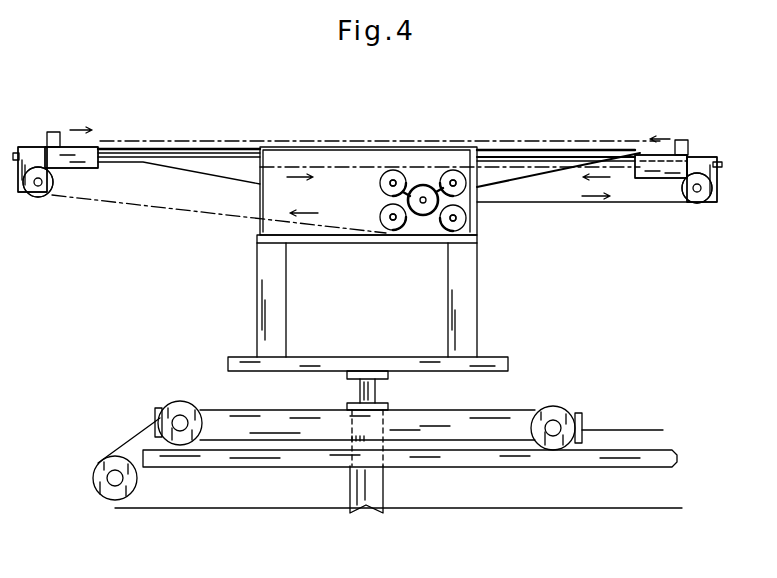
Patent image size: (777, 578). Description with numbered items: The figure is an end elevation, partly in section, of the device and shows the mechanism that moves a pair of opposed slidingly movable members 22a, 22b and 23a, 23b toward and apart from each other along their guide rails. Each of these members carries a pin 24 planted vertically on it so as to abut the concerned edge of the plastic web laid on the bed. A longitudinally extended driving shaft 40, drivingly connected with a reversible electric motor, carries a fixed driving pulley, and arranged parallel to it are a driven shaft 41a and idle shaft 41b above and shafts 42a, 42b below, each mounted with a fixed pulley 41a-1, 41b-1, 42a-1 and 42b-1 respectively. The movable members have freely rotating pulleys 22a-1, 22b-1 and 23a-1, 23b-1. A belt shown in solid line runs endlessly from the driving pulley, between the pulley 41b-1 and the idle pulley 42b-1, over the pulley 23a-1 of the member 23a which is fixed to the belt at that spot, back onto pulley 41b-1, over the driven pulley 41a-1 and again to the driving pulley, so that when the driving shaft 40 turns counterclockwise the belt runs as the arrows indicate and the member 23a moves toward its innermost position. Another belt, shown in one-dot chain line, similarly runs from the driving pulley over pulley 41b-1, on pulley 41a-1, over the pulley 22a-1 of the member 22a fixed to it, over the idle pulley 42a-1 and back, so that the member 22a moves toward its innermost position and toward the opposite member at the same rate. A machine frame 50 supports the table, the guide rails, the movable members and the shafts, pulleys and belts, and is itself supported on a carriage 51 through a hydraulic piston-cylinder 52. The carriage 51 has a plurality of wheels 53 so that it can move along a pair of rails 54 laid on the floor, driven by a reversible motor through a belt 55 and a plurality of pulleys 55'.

The pin 24 is at (52, 132).
The slidingly movable member 22a is at (88, 150).
The slidingly movable member 22b is at (81, 150).
The pulley 22a-1 is at (38, 198).
The pulley 22b-1 is at (53, 211).
The slidingly movable member 23a is at (692, 157).
The slidingly movable member 23b is at (692, 167).
The pulley 23a-1 is at (705, 218).
The pulley 23b-1 is at (713, 219).
The driving shaft 40 is at (421, 186).
The driven shaft 41a is at (380, 183).
The driven pulley 41a-1 is at (385, 172).
The idle shaft 41b is at (462, 190).
The pulley 41b-1 is at (450, 172).
The driven shaft 42a is at (380, 217).
The idle pulley 42a-1 is at (385, 229).
The idle shaft 42b is at (460, 222).
The idle pulley 42b-1 is at (441, 231).
The machine frame 50 is at (486, 294).
The carriage 51 is at (515, 413).
The hydraulic piston-cylinder 52 is at (383, 445).
The wheels 53 is at (172, 404).
The rails 54 is at (643, 469).
The belt 55 is at (390, 477).
The pulleys 55' is at (115, 496).